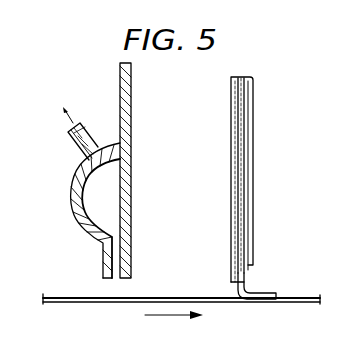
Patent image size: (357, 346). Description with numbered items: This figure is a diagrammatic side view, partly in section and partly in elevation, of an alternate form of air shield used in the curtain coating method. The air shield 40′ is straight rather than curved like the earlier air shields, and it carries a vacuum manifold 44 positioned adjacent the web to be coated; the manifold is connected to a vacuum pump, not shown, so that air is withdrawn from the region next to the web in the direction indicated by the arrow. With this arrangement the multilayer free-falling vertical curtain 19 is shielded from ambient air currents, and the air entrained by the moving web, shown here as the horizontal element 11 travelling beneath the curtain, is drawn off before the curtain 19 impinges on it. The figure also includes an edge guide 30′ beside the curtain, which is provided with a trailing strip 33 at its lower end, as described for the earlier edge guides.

The air shield 40′ is at (131, 115).
The vacuum manifold 44 is at (113, 233).
The edge guide 30′ is at (253, 127).
The multilayer free-falling vertical curtain 19 is at (237, 191).
The trailing strip 33 is at (259, 293).
The rail 11 is at (190, 297).